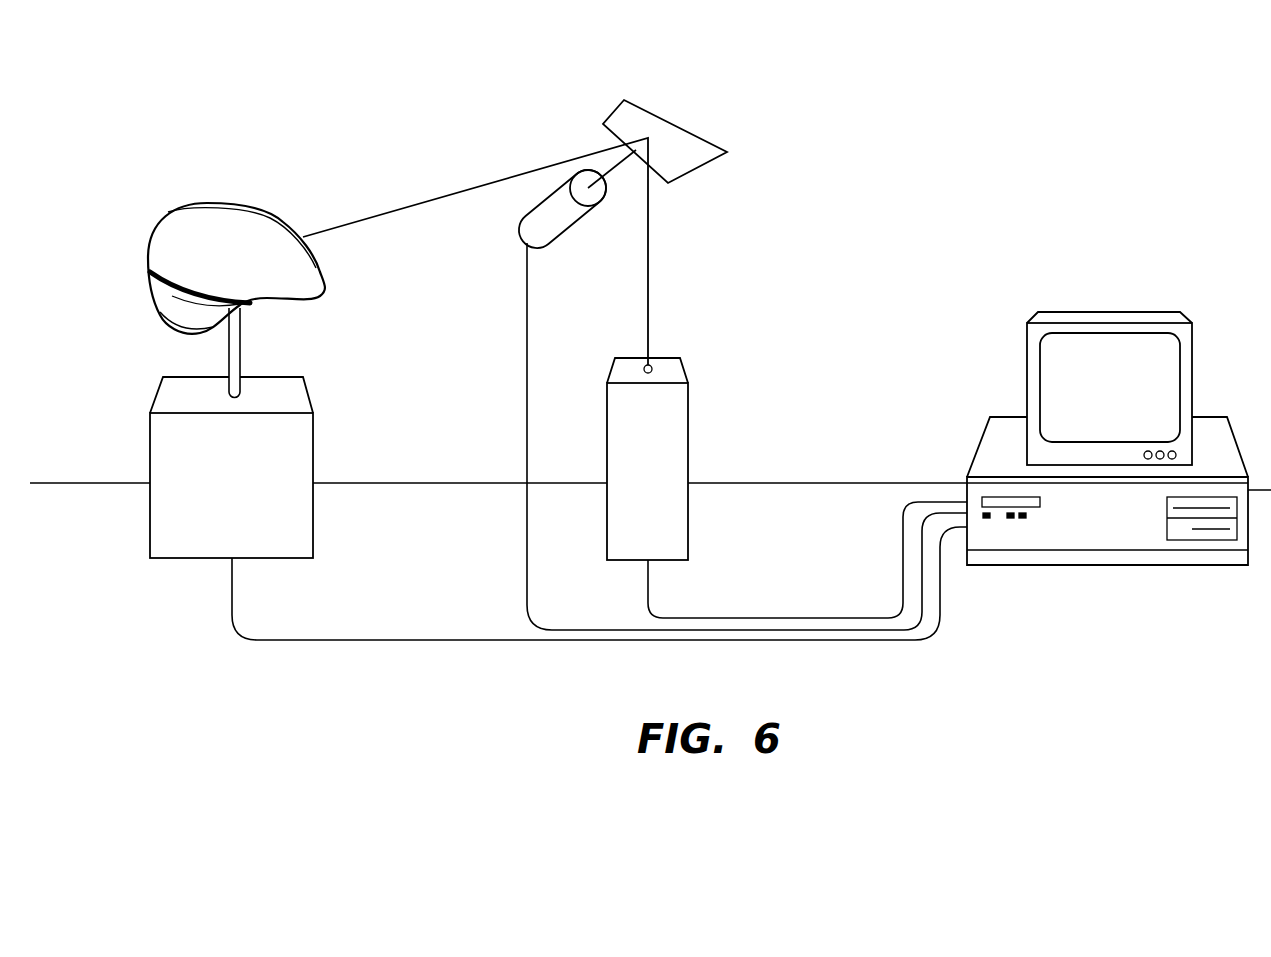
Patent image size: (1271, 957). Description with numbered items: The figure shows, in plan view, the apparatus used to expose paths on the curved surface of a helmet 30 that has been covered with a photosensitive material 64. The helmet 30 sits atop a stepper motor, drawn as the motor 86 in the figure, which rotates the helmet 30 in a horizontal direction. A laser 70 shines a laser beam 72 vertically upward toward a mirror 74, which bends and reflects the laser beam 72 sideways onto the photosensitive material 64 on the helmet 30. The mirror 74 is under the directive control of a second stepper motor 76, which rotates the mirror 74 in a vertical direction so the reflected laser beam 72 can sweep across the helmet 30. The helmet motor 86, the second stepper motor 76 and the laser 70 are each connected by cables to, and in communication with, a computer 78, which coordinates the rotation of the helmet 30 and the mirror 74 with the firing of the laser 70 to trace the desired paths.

The helmet 30 is at (138, 346).
The photosensitive material 64 is at (300, 270).
The laser 70 is at (682, 455).
The laser beam 72 is at (483, 182).
The mirror 74 is at (673, 135).
The second stepper motor 76 is at (525, 206).
The computer 78 is at (1104, 624).
The helmet motor 86 is at (297, 455).